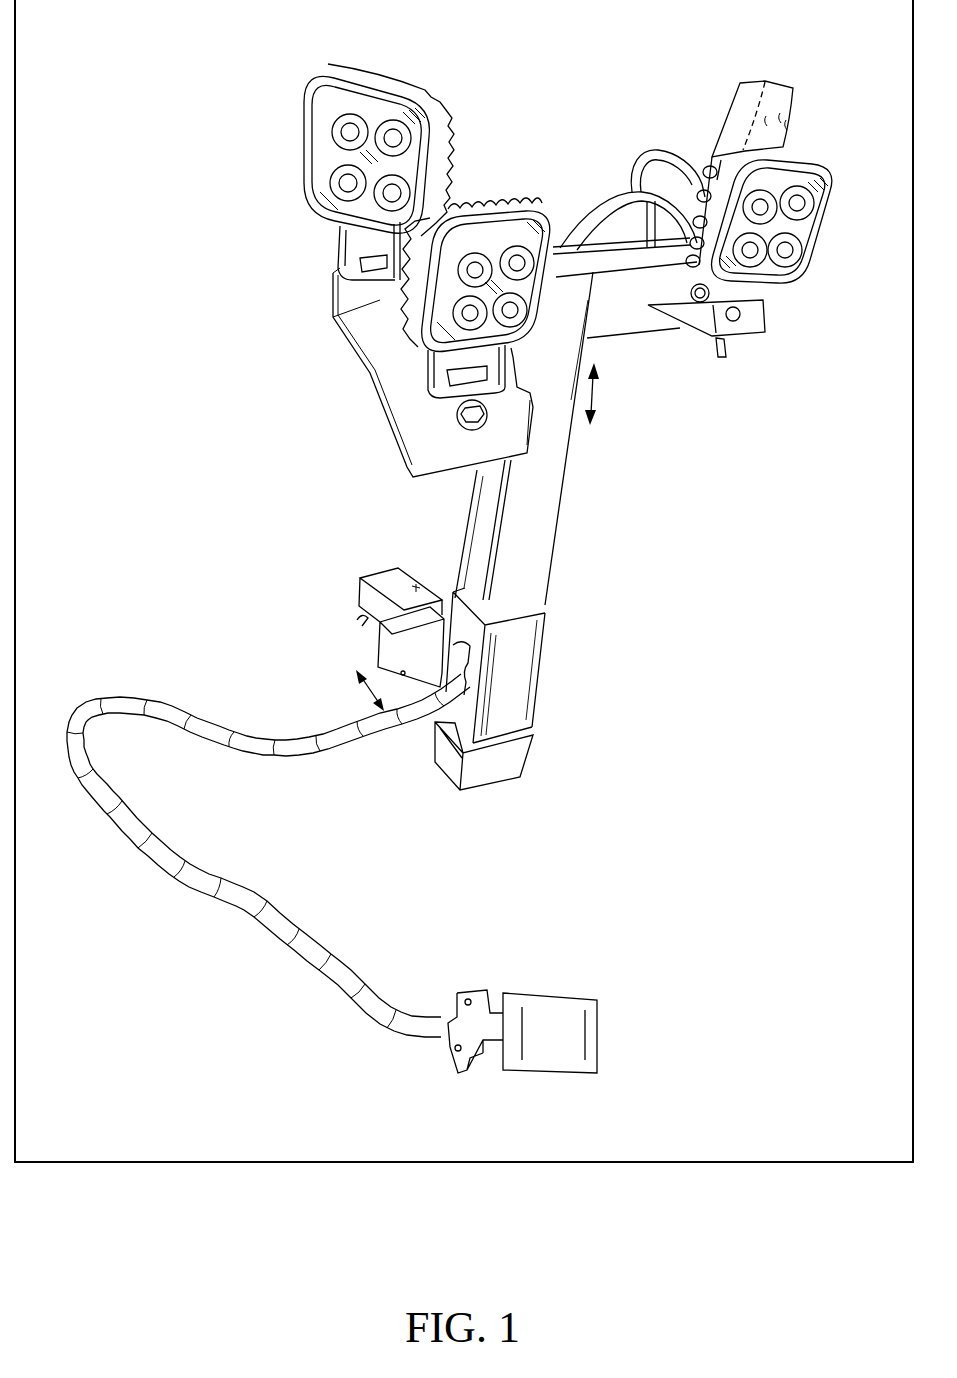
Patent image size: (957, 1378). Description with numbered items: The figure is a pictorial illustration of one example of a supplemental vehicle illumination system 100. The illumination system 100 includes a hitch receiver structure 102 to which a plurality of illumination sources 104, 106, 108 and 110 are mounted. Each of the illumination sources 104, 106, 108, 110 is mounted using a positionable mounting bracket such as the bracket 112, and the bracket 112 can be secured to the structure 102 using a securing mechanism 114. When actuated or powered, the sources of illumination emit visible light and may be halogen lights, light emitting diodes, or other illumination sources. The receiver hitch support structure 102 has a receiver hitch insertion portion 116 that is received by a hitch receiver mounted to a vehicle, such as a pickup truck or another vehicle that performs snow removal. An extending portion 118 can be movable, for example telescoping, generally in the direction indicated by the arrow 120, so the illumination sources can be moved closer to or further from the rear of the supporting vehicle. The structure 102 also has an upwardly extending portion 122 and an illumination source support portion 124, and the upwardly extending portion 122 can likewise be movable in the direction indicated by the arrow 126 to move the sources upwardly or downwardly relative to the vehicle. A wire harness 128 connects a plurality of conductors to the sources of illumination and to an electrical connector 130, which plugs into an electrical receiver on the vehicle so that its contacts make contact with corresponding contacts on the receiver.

The supplemental vehicle illumination system 100 is at (182, 115).
The hitch receiver structure 102 is at (558, 589).
The illumination source 104 is at (378, 76).
The illumination source 106 is at (483, 226).
The illumination source 108 is at (802, 160).
The illumination source 110 is at (773, 83).
The positionable mounting bracket 112 is at (703, 313).
The securing mechanism 114 is at (747, 316).
The receiver hitch insertion portion 116 is at (380, 574).
The extending portion 118 is at (383, 663).
The arrow 120 is at (377, 697).
The upwardly extending portion 122 is at (557, 538).
The illumination source support portion 124 is at (561, 248).
The arrow 126 is at (598, 393).
The wire harness 128 is at (283, 917).
The electrical connector 130 is at (560, 1000).